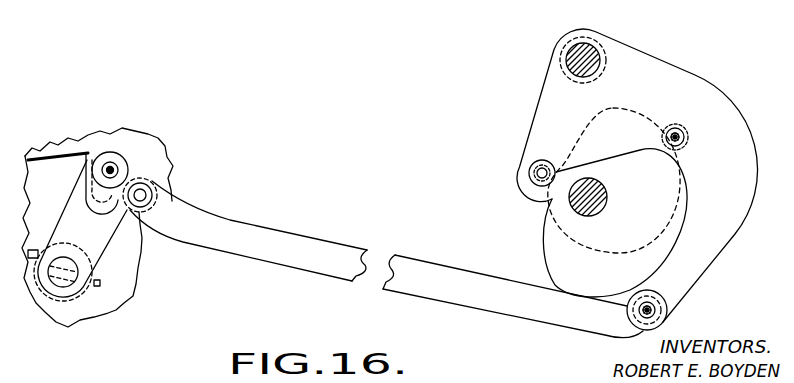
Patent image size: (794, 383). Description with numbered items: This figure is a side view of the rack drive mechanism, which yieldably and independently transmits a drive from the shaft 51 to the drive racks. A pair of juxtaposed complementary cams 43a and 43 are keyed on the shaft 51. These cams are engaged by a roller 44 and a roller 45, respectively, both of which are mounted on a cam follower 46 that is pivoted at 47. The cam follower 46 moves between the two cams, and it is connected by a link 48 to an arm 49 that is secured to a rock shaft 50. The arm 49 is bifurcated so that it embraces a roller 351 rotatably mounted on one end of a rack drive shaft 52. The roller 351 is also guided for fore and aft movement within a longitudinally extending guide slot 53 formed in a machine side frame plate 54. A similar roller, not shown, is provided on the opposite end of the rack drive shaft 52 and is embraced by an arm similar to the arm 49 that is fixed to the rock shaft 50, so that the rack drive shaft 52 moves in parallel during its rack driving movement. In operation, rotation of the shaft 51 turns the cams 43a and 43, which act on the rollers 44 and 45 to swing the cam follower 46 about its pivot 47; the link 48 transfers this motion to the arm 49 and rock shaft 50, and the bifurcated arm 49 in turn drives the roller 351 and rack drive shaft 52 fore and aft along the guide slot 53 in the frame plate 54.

The cam 43 is at (637, 100).
The cam 43a is at (553, 260).
The roller 44 is at (529, 174).
The roller 45 is at (700, 116).
The cam follower 46 is at (692, 47).
The pivot 47 is at (590, 48).
The link 48 is at (351, 250).
The arm 49 is at (135, 262).
The rock shaft 50 is at (110, 313).
The shaft 51 is at (607, 196).
The rack drive shaft 52 is at (113, 167).
The guide slot 53 is at (64, 160).
The machine side frame plate 54 is at (173, 161).
The roller 351 is at (106, 160).